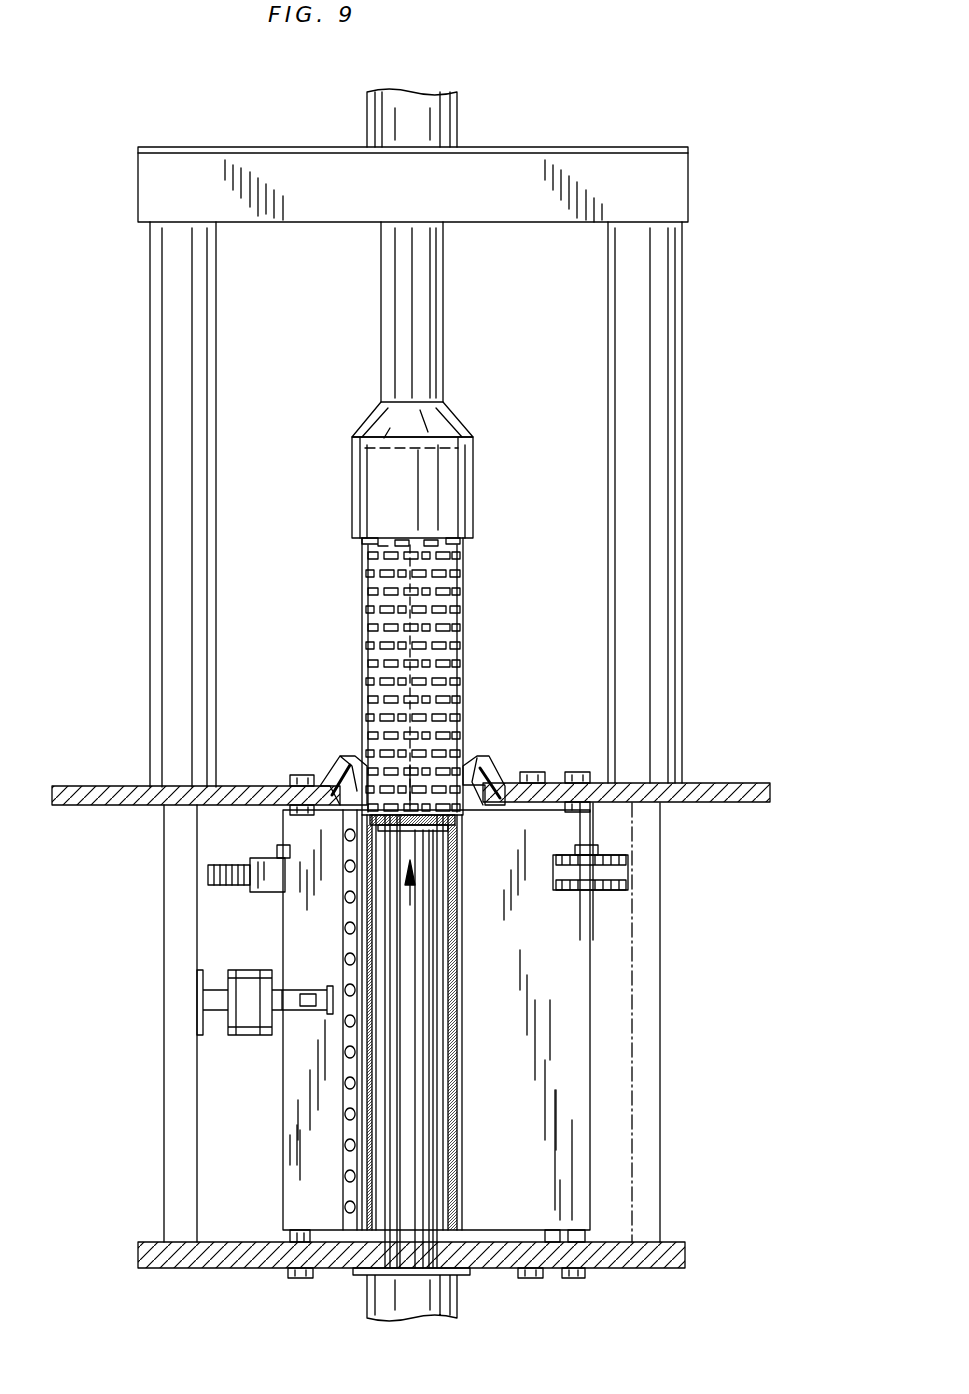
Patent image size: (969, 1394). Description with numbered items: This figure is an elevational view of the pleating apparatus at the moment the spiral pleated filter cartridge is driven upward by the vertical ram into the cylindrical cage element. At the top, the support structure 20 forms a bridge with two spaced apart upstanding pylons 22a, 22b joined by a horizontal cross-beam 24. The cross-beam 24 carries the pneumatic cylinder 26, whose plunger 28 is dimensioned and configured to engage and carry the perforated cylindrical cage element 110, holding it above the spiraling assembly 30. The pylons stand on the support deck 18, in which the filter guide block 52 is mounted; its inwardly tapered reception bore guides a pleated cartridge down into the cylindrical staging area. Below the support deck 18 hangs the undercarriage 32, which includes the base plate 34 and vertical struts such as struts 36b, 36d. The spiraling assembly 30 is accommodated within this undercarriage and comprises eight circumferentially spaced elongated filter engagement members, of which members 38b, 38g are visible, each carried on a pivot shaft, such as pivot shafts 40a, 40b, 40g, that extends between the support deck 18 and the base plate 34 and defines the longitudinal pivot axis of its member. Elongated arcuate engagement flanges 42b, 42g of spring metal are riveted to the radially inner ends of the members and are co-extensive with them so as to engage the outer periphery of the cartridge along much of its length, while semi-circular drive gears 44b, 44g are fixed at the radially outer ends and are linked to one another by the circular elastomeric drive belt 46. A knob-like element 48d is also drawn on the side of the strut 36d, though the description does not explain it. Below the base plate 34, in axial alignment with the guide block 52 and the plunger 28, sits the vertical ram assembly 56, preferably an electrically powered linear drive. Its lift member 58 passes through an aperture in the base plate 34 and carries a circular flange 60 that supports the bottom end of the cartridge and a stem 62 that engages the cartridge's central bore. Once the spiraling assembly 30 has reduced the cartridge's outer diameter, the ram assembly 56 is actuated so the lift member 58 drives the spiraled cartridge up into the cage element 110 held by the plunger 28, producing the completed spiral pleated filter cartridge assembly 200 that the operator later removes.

The support deck 18 is at (718, 790).
The support structure 20 is at (140, 340).
The pylon 22a is at (162, 492).
The pylon 22b is at (660, 352).
The horizontal cross-beam 24 is at (628, 162).
The pneumatic cylinder 26 is at (450, 105).
The plunger 28 is at (465, 470).
The spiraling assembly 30 is at (592, 958).
The undercarriage 32 is at (662, 1000).
The base plate 34 is at (238, 1262).
The vertical strut 36b is at (655, 1073).
The vertical strut 36d is at (175, 997).
The filter engagement member 38b is at (556, 1115).
The filter engagement member 38g is at (288, 1140).
The pivot shaft 40a is at (495, 802).
The pivot shaft 40b is at (590, 792).
The pivot shaft 40g is at (300, 808).
The engagement flange 42b is at (455, 1172).
The engagement flange 42g is at (360, 1185).
The drive gear 44b is at (615, 852).
The drive gear 44g is at (270, 883).
The drive belt 46 is at (227, 860).
The knob 48d is at (270, 1030).
The filter guide block 52 is at (343, 785).
The vertical ram assembly 56 is at (458, 1300).
The lift member 58 is at (400, 1100).
The circular flange 60 is at (425, 832).
The stem 62 is at (408, 768).
The cylindrical cage element 110 is at (458, 590).
The spiral pleated filter cartridge assembly 200 is at (466, 639).